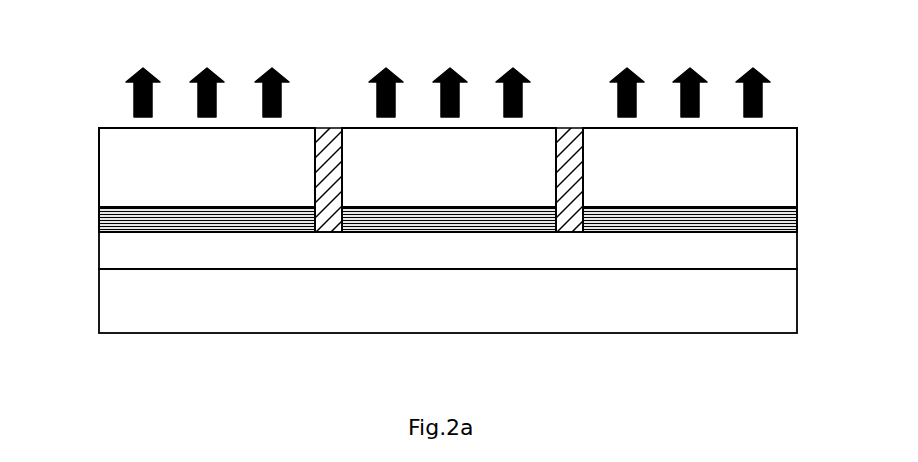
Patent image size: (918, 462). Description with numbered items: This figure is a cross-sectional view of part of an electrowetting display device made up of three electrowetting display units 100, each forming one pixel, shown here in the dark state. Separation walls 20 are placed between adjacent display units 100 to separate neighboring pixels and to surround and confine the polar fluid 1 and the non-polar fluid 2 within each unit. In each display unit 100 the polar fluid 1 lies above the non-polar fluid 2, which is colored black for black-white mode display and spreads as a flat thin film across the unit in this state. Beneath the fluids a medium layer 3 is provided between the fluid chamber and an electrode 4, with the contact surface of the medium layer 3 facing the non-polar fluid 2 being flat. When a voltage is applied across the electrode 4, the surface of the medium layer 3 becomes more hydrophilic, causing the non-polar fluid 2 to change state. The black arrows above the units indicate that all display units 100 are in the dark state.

The polar fluid 1 is at (113, 153).
The non-polar fluid 2 is at (110, 223).
The medium layer 3 is at (105, 247).
The electrode 4 is at (318, 307).
The separation wall 20 is at (566, 136).
The electrowetting display unit 100 is at (166, 106).